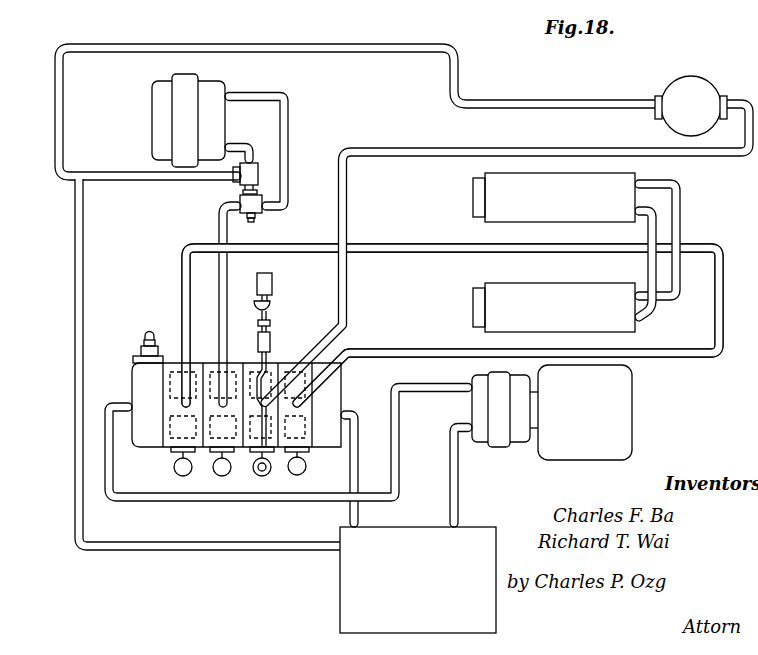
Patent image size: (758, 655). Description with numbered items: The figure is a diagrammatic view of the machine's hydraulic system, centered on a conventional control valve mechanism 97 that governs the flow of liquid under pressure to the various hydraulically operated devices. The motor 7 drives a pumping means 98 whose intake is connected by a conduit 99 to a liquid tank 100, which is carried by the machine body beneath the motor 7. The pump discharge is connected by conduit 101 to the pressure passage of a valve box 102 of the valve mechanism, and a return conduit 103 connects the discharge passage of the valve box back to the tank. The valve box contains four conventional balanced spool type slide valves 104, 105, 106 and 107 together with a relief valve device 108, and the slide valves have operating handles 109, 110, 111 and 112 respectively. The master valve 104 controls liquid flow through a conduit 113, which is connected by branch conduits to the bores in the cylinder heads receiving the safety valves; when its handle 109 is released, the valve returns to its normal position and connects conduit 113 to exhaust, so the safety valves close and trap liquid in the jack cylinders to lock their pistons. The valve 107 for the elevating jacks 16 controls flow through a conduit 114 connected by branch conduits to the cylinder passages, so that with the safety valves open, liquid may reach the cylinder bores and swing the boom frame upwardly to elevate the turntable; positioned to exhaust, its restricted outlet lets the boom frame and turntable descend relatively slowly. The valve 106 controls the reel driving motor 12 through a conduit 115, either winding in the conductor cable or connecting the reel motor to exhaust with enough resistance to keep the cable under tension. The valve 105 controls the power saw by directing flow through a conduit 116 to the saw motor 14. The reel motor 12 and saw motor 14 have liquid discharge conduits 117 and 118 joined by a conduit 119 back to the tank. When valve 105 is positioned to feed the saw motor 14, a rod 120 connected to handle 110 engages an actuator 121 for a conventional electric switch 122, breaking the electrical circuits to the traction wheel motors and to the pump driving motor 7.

The motor 7 is at (619, 424).
The reel driving motor 12 is at (158, 91).
The saw motor 14 is at (712, 84).
The elevating jacks 16 is at (580, 290).
The control valve mechanism 97 is at (128, 382).
The pumping means 98 is at (503, 437).
The conduit 99 is at (458, 506).
The liquid tank 100 is at (357, 590).
The conduit 101 is at (400, 460).
The valve box 102 is at (308, 430).
The return conduit 103 is at (356, 411).
The slide valve 104 is at (303, 441).
The slide valve 105 is at (252, 440).
The slide valve 106 is at (217, 440).
The slide valve 107 is at (175, 441).
The relief valve device 108 is at (147, 348).
The operating handle 109 is at (298, 476).
The operating handle 110 is at (266, 477).
The operating handle 111 is at (228, 477).
The operating handle 112 is at (180, 477).
The conduit 113 is at (671, 357).
The conduit 114 is at (443, 252).
The conduit 115 is at (229, 290).
The conduit 116 is at (349, 204).
The liquid discharge conduit 117 is at (187, 178).
The liquid discharge conduit 118 is at (551, 100).
The conduit 119 is at (74, 286).
The rod 120 is at (268, 357).
The actuator 121 is at (272, 308).
The electric switch 122 is at (272, 282).